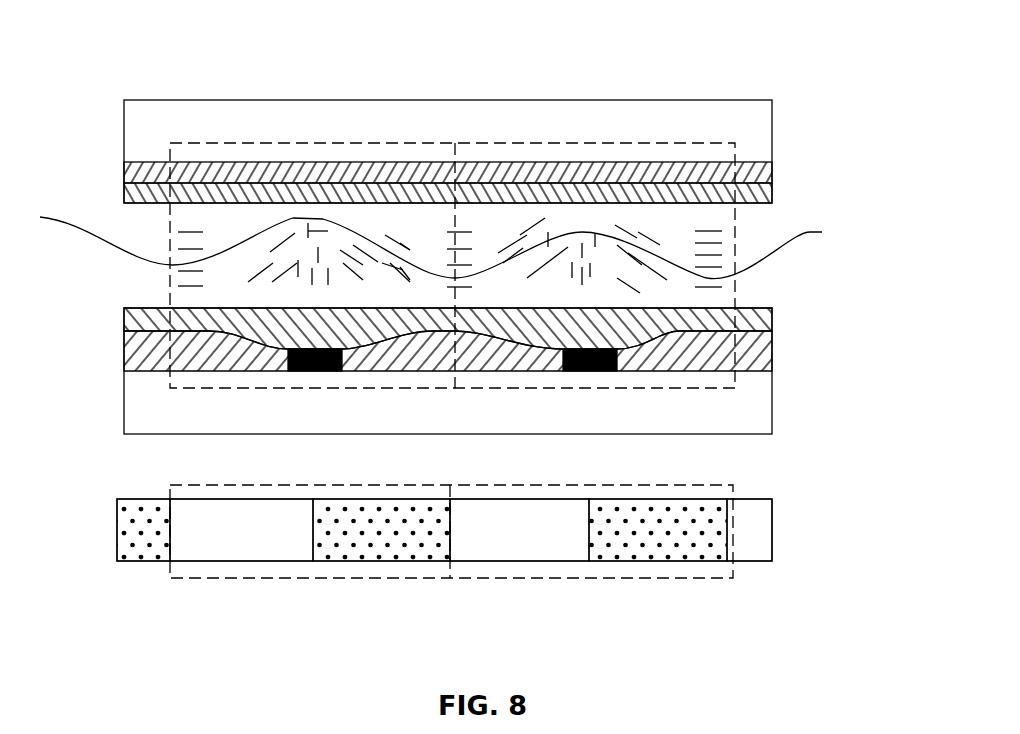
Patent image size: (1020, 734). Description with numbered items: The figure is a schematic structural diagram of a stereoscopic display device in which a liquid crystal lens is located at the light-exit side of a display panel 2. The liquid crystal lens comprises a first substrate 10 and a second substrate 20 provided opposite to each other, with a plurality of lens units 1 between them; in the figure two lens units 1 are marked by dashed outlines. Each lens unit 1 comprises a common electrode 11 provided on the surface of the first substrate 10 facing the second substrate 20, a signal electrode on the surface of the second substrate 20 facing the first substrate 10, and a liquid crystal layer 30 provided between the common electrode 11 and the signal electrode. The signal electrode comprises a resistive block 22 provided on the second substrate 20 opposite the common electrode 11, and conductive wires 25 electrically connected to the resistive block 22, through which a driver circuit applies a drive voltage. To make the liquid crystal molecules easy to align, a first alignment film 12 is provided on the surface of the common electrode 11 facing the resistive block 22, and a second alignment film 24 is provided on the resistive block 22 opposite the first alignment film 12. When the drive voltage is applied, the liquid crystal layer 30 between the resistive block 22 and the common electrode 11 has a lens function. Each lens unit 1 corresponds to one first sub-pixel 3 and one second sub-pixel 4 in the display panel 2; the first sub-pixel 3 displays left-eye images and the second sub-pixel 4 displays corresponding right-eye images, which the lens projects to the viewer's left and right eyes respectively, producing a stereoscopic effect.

The lens unit 1 is at (313, 145).
The first substrate 10 is at (717, 133).
The common electrode 11 is at (717, 173).
The first alignment film 12 is at (720, 197).
The liquid crystal layer 30 is at (702, 262).
The second alignment film 24 is at (718, 321).
The resistive block 22 is at (718, 357).
The second substrate 20 is at (717, 407).
The conductive wire 25 is at (597, 371).
The display panel 2 is at (778, 529).
The first sub-pixel 3 is at (252, 535).
The second sub-pixel 4 is at (388, 537).